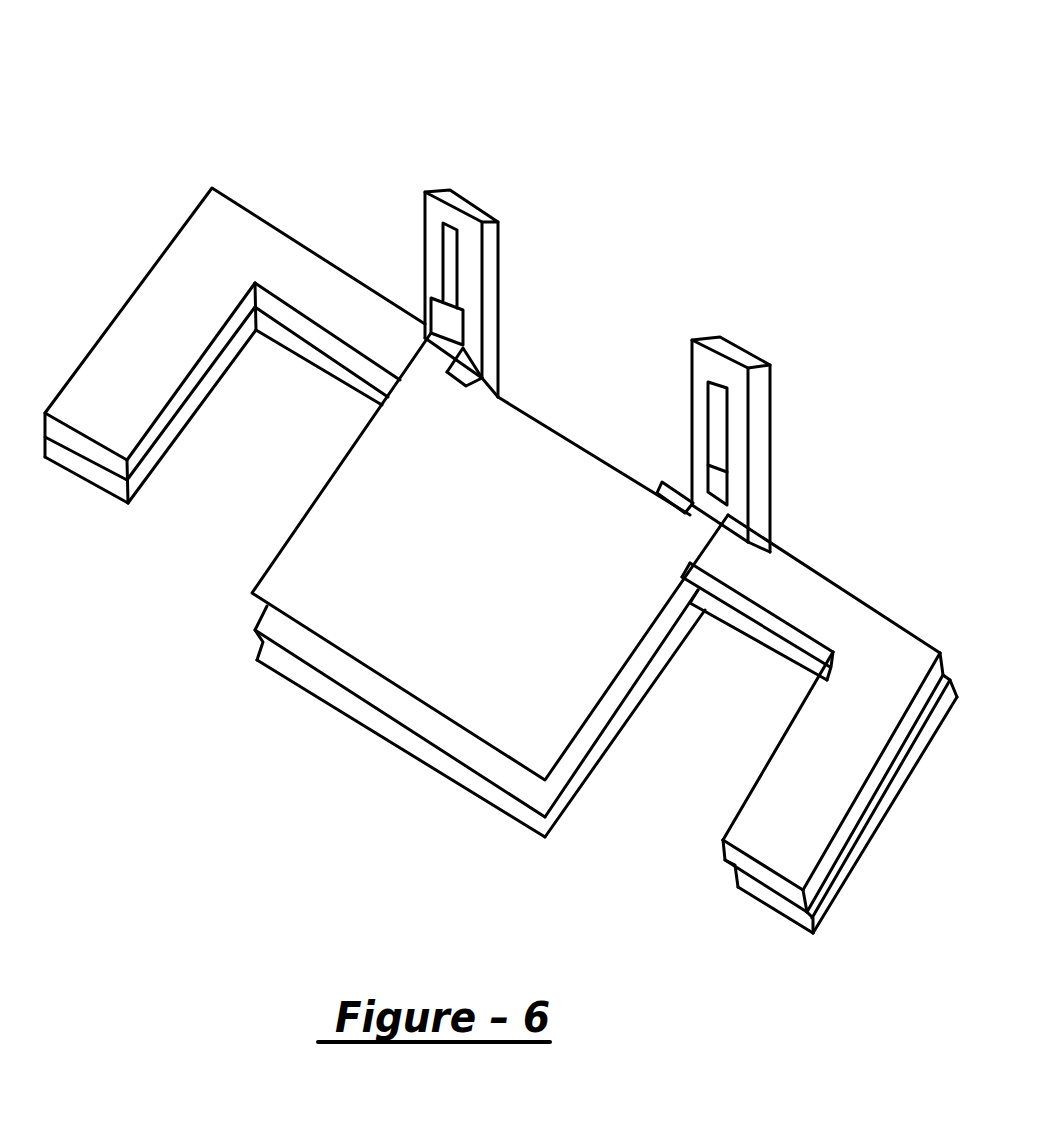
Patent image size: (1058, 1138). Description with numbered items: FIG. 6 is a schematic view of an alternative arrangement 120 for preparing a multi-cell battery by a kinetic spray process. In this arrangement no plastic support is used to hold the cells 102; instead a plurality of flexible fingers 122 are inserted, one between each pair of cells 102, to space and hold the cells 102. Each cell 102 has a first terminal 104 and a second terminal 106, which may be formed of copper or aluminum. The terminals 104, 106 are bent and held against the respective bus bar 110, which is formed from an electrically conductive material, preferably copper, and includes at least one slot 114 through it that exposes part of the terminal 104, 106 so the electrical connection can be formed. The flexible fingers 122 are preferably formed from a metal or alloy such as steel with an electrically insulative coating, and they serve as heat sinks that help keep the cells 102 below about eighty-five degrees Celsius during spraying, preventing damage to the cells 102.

The cell 102 is at (285, 553).
The first terminal 104 is at (722, 474).
The second terminal 106 is at (432, 302).
The bus bar 110 is at (433, 200).
The slot 114 is at (712, 393).
The alternative arrangement 120 is at (649, 246).
The flexible finger 122 is at (192, 248).